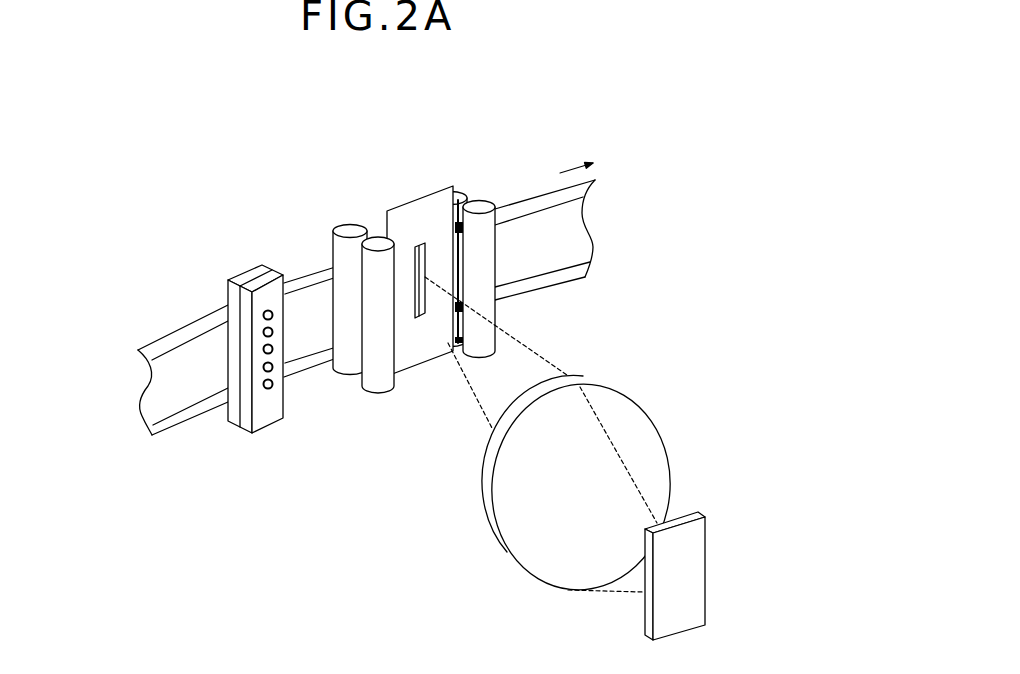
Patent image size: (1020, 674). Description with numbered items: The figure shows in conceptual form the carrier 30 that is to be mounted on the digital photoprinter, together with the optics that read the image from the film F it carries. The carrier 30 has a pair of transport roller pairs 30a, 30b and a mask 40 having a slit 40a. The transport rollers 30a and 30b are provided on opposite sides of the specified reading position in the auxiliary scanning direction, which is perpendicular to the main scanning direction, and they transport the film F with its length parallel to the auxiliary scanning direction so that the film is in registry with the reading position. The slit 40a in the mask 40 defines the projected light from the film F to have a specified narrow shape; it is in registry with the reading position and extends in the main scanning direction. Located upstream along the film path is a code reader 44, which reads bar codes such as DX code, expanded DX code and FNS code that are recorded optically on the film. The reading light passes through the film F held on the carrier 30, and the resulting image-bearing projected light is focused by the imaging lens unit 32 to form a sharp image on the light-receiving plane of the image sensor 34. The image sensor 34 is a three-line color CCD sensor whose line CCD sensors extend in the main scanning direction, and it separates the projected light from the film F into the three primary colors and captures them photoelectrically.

The carrier 30 is at (357, 193).
The transport roller pair 30a is at (373, 373).
The transport roller pair 30b is at (478, 282).
The mask 40 is at (445, 281).
The slit 40a is at (418, 245).
The code reader 44 is at (248, 277).
The imaging lens unit 32 is at (623, 420).
The image sensor 34 is at (687, 570).
The film F is at (575, 222).